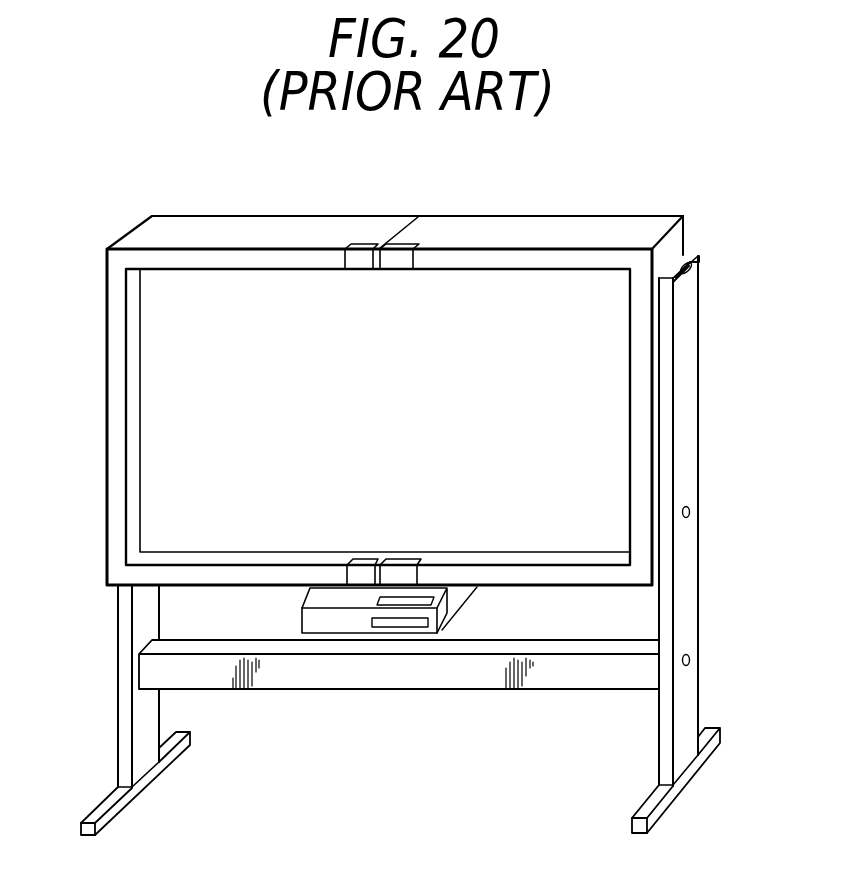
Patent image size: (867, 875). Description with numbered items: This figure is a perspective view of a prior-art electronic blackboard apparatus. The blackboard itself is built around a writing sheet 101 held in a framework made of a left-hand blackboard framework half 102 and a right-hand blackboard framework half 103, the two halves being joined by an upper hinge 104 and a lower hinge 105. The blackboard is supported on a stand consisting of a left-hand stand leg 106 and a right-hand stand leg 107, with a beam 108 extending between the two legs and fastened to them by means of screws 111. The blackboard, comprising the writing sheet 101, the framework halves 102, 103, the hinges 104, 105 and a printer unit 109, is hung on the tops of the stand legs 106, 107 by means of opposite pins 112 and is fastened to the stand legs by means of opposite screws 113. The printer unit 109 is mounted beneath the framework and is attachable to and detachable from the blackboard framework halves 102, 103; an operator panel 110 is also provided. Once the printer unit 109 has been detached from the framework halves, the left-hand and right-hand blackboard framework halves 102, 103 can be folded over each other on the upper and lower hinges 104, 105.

The writing sheet 101 is at (610, 435).
The left-hand blackboard framework half 102 is at (258, 228).
The right-hand blackboard framework half 103 is at (528, 220).
The upper hinge 104 is at (392, 240).
The lower hinge 105 is at (363, 572).
The left-hand stand leg 106 is at (147, 733).
The right-hand stand leg 107 is at (698, 703).
The beam 108 is at (572, 677).
The printer unit 109 is at (333, 626).
The operator panel 110 is at (433, 647).
The screws 111 is at (690, 658).
The pins 112 is at (690, 258).
The screws 113 is at (690, 512).